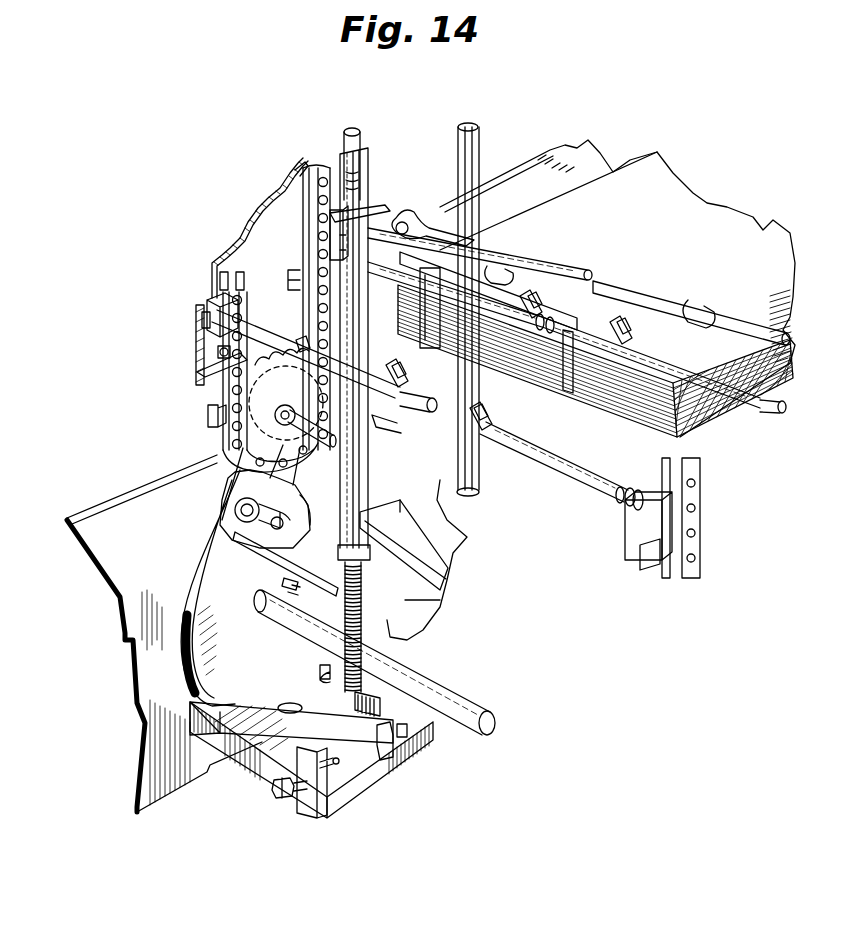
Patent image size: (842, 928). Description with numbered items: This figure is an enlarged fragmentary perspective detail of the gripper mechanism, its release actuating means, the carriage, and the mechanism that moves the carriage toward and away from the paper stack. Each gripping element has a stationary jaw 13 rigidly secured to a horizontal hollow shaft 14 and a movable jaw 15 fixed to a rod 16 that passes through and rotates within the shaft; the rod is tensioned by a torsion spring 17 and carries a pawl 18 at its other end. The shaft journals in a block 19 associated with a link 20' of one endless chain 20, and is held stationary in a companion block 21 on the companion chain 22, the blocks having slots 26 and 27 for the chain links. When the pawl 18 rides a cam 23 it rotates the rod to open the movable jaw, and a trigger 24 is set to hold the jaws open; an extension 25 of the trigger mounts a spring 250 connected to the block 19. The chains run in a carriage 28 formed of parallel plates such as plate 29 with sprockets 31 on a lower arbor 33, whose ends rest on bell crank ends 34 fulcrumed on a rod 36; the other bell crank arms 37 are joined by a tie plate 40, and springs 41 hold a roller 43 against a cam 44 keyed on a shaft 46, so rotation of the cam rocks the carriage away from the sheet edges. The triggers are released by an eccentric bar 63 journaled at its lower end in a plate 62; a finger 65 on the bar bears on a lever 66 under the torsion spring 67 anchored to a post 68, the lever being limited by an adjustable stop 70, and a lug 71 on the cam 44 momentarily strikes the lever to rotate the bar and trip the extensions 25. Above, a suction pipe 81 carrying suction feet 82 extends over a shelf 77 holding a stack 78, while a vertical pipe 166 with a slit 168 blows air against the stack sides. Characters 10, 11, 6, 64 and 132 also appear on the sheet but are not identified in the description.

The plate 10 is at (110, 501).
The section line 11- 11 is at (333, 168).
The stationary jaw 13 is at (526, 298).
The hollow shaft 14 is at (562, 475).
The movable jaw 15 is at (410, 200).
The rod 16 is at (430, 402).
The torsion spring 17 is at (626, 510).
The pawl 18 is at (197, 343).
The block 19 is at (215, 300).
The endless chain 20 is at (298, 307).
The link 20' is at (269, 372).
The block 21 is at (636, 536).
The companion chain 22 is at (690, 492).
The cam 23 is at (206, 420).
The trigger 24 is at (350, 216).
The extension 25 is at (380, 210).
The slot 26 is at (203, 318).
The slot 27 is at (642, 550).
The carriage 28 is at (246, 238).
The plate 29 is at (288, 190).
The sprocket 31 is at (283, 350).
The lower arbor 33 is at (331, 448).
The bell crank end 34 is at (300, 342).
The rod 36 is at (264, 500).
The bell crank arm 37 is at (293, 503).
The tie plate 40 is at (260, 562).
The spring 41 is at (298, 589).
The roller 43 is at (311, 522).
The cam 44 is at (205, 578).
The shaft 46 is at (478, 710).
The plate 62 is at (360, 790).
The eccentric bar 63 is at (352, 128).
The post 64 is at (368, 152).
The finger 65 is at (431, 728).
The lever 66 is at (369, 770).
The torsion spring 67 is at (363, 615).
The post 68 is at (356, 636).
The adjustable stop 70 is at (287, 799).
The lug 71 is at (215, 733).
The shelf 77 is at (602, 156).
The stack 78 is at (628, 405).
The pipe 81 is at (575, 272).
The suction element 82 is at (486, 270).
The plate 132 is at (424, 302).
The vertical pipe 166 is at (480, 137).
The slit 168 is at (478, 237).
The spring 250 is at (246, 352).
The section line 6- 6 is at (175, 472).